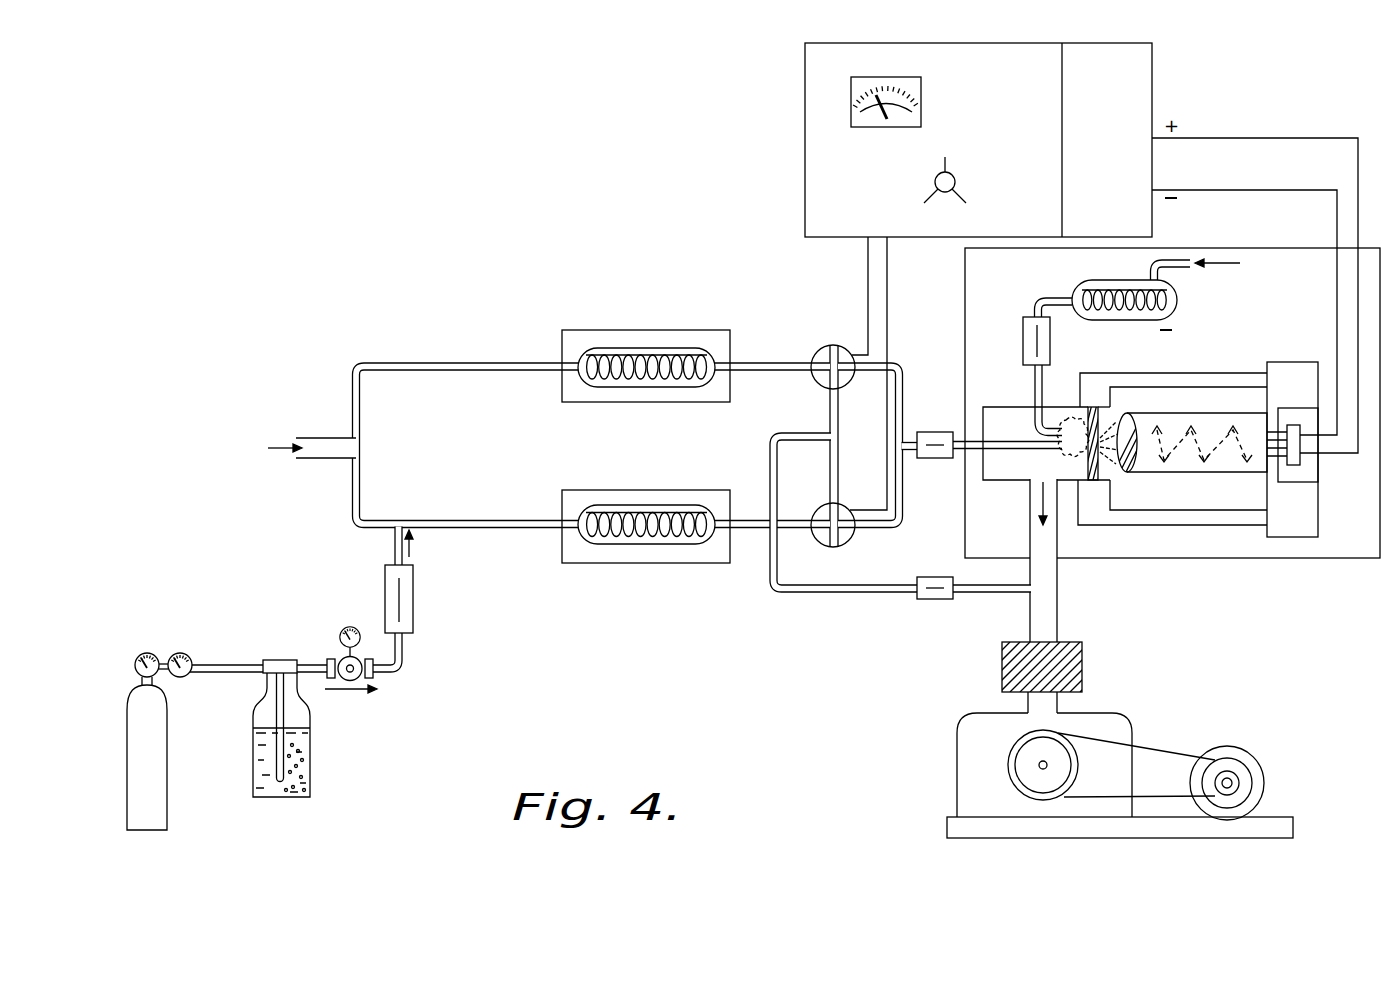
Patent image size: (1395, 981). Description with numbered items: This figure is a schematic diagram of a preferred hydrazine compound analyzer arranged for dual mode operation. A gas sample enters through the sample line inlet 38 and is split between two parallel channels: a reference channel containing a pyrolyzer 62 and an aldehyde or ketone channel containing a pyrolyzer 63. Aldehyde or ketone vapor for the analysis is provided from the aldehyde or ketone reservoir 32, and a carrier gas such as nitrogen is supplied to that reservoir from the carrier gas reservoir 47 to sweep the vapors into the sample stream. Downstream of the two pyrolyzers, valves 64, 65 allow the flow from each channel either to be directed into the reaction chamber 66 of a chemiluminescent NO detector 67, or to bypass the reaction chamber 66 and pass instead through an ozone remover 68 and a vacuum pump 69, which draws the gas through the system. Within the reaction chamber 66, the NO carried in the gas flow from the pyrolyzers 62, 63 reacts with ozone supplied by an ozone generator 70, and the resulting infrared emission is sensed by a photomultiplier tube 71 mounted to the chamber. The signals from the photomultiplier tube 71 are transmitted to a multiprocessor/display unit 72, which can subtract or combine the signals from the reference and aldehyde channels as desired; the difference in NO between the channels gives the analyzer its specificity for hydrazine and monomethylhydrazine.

The aldehyde or ketone reservoir 32 is at (312, 765).
The sample line inlet connection 38 is at (333, 437).
The carrier gas reservoir 47 is at (167, 765).
The pyrolyzer 62 is at (632, 330).
The pyrolyzer 63 is at (657, 565).
The valve 64 is at (818, 347).
The valve 65 is at (852, 540).
The reaction chamber 66 is at (1012, 407).
The chemiluminescent NO detector 67 is at (1265, 558).
The ozone remover 68 is at (1082, 664).
The vacuum pump 69 is at (957, 752).
The ozone generator 70 is at (1100, 282).
The photomultiplier tube 71 is at (1218, 472).
The multiprocessor/display unit 72 is at (804, 94).